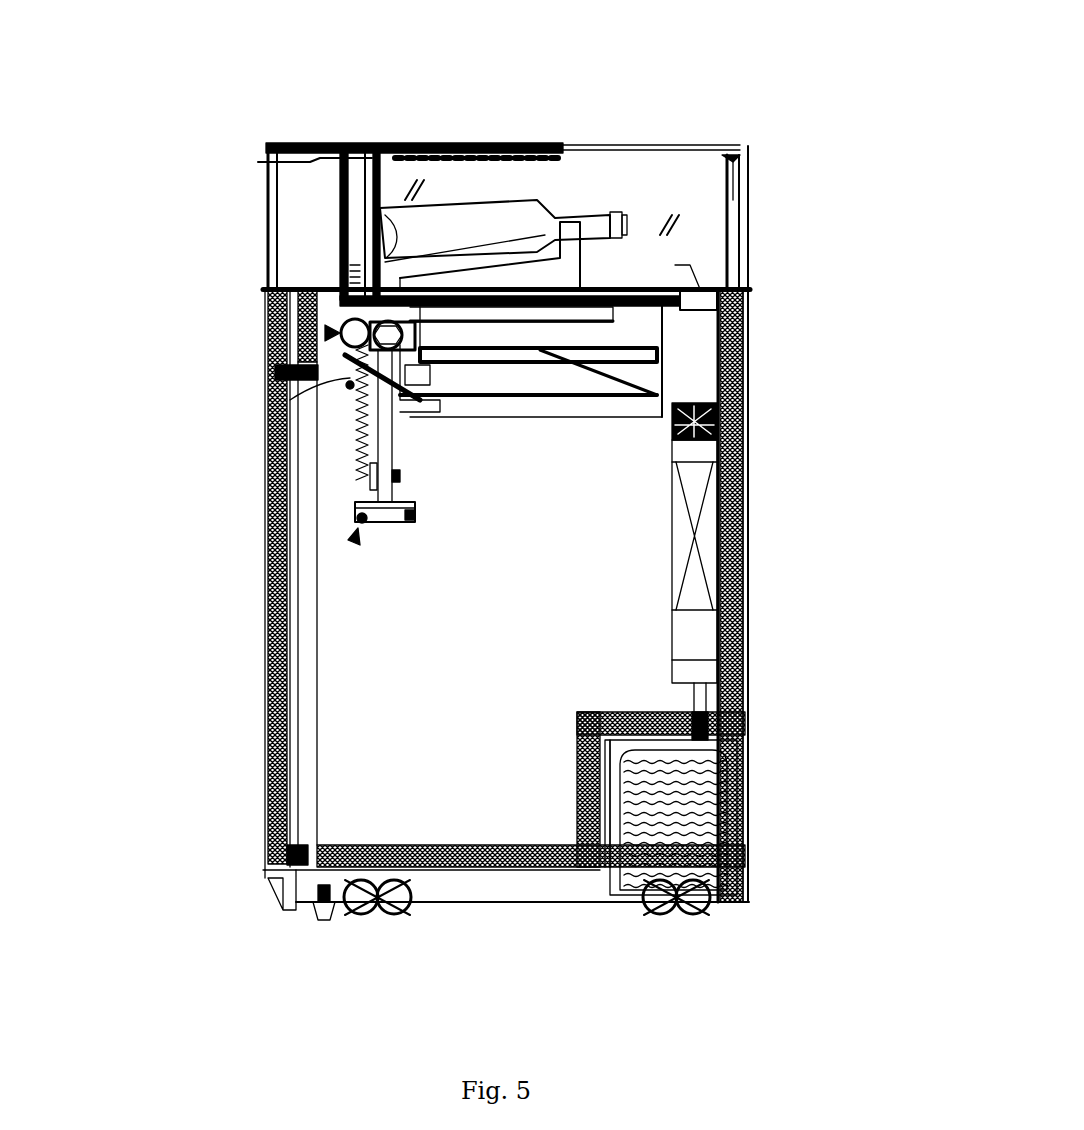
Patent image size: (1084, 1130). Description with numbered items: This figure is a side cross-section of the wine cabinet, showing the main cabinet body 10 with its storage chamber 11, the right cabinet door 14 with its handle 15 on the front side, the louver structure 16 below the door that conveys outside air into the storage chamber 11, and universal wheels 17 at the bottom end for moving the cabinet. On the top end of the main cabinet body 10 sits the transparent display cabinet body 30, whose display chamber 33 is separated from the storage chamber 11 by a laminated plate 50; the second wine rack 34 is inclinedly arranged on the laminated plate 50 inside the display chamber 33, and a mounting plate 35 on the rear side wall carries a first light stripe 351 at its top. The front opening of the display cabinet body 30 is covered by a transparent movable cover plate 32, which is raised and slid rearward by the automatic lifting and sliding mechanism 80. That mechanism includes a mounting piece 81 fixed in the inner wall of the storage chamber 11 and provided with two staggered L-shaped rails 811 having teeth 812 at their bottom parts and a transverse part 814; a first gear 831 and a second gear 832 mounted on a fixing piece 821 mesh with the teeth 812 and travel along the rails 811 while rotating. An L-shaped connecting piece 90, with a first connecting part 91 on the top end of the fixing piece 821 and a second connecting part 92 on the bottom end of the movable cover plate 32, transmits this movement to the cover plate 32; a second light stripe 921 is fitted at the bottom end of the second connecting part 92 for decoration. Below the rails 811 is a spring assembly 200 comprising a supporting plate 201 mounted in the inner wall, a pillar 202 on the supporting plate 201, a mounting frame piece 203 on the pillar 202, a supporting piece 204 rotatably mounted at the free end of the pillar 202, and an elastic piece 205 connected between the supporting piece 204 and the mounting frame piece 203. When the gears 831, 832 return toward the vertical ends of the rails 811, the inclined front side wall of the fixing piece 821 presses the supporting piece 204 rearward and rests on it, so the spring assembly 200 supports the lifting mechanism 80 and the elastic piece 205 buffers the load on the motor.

The main cabinet body 10 is at (753, 745).
The storage chamber 11 is at (340, 695).
The right cabinet door 14 is at (270, 740).
The handle 15 is at (250, 299).
The louver structure 16 is at (263, 890).
The universal wheel 17 is at (378, 910).
The display cabinet body 30 is at (740, 188).
The movable cover plate 32 is at (357, 160).
The display chamber 33 is at (596, 170).
The second wine rack 34 is at (587, 260).
The mounting plate 35 is at (743, 161).
The first light stripe 351 is at (735, 156).
The laminated plate 50 is at (652, 290).
The automatic lifting and sliding mechanism 80 is at (320, 332).
The mounting piece 81 is at (657, 355).
The L-shaped rail 811 is at (613, 311).
The teeth 812 is at (662, 395).
The transverse part 814 is at (746, 438).
The fixing piece 821 is at (338, 373).
The first gear 831 is at (395, 334).
The second gear 832 is at (415, 378).
The connecting piece 90 is at (180, 150).
The first connecting part 91 is at (350, 211).
The second connecting part 92 is at (258, 162).
The second light stripe 921 is at (448, 150).
The spring assembly 200 is at (343, 545).
The supporting plate 201 is at (356, 526).
The pillar 202 is at (358, 512).
The mounting frame piece 203 is at (368, 483).
The supporting piece 204 is at (345, 383).
The elastic piece 205 is at (340, 432).